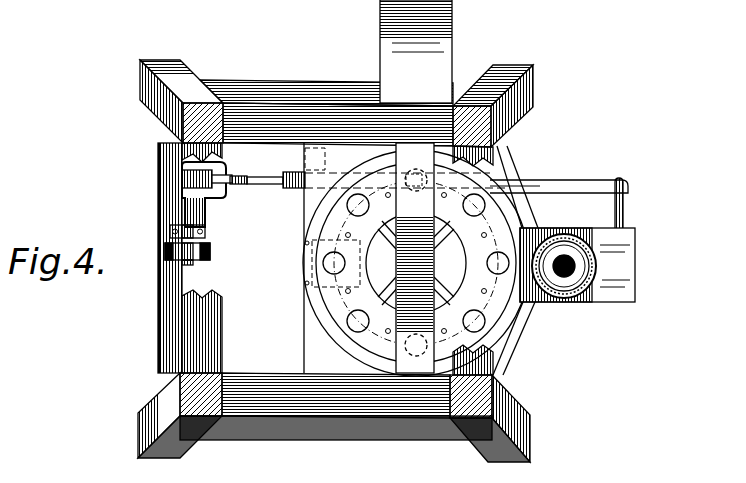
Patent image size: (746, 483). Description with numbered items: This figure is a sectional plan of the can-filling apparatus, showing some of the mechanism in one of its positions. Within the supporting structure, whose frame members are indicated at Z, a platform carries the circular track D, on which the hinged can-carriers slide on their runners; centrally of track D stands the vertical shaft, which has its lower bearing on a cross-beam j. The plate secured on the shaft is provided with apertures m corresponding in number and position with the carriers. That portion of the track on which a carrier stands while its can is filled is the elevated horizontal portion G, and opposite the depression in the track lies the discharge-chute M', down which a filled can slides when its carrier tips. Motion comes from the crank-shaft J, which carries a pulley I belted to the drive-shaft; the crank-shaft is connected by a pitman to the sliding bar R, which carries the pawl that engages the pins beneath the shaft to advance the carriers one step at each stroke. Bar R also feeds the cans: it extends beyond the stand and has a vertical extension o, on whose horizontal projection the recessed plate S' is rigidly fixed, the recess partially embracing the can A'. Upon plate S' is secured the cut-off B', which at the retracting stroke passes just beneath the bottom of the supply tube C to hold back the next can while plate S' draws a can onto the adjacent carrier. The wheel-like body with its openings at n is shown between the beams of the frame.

The frame beams Z is at (172, 115).
The discharge-chute M' is at (440, 51).
The wheel n is at (416, 263).
The apertures m is at (336, 263).
The cross-beam j is at (415, 258).
The horizontal portion of track G is at (305, 237).
The crank-shaft J is at (228, 198).
The pulley I is at (210, 249).
The bar R is at (567, 180).
The circular track D is at (500, 192).
The vertical extension o is at (625, 208).
The cut-off B' is at (577, 265).
The can A' is at (570, 251).
The recessed plate S' is at (565, 246).
The tube C is at (583, 292).